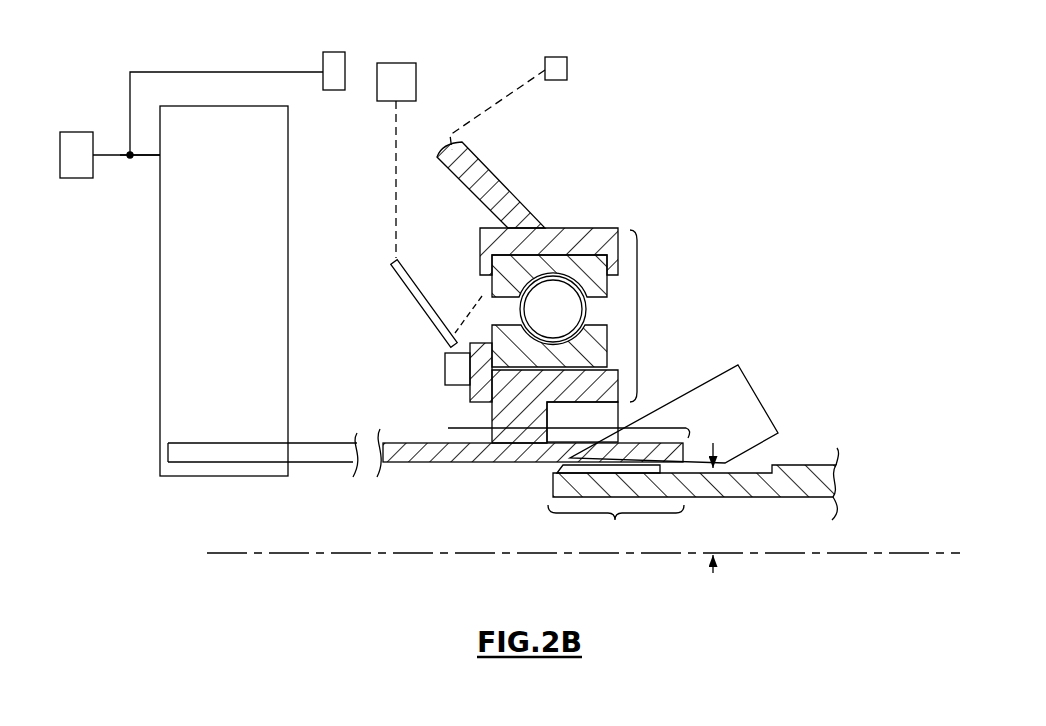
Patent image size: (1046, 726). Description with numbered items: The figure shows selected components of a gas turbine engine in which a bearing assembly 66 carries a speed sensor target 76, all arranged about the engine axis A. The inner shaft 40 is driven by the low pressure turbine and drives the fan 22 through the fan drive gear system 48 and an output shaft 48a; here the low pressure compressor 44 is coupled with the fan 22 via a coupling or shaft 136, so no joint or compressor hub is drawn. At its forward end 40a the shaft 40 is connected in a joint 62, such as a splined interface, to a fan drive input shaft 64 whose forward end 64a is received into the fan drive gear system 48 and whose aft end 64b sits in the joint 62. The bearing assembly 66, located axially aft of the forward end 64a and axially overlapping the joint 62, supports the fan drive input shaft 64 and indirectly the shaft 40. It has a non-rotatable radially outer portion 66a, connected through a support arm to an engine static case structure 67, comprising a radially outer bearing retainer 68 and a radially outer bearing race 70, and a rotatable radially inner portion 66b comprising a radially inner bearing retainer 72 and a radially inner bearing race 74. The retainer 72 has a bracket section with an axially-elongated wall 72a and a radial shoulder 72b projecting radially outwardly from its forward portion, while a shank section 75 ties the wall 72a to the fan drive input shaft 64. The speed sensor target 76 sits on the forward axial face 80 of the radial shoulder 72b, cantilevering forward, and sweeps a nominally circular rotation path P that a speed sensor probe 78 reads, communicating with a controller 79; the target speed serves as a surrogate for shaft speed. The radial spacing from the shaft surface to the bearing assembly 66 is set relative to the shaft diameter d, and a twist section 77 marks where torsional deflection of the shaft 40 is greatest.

The fan 22 is at (80, 178).
The coupling or shaft 136 is at (176, 72).
The low pressure compressor 44 is at (340, 52).
The fan drive gear system 48 is at (288, 193).
The output shaft 48a is at (147, 157).
The controller 79 is at (400, 63).
The engine static case structure 67 is at (561, 57).
The bearing assembly 66 is at (638, 312).
The radially outer bearing retainer 68 is at (565, 233).
The radially outer bearing race 70 is at (592, 248).
The radially outer portion 66a is at (468, 242).
The rotation path P is at (470, 266).
The radially inner portion 66b is at (466, 325).
The radially inner bearing race 74 is at (590, 352).
The speed sensor probe 78 is at (392, 262).
The forward axial face 80 is at (445, 370).
The speed sensor target 76 is at (439, 354).
The radially inner bearing retainer 72 is at (572, 460).
The radial shoulder 72b is at (483, 393).
The axially-elongated wall 72a is at (612, 396).
The shank section 75 is at (490, 403).
The twist section 77 is at (775, 393).
The fan drive input shaft 64 is at (313, 462).
The forward end 64a is at (242, 428).
The aft end 64b is at (448, 428).
The joint 62 is at (540, 481).
The shaft 40 is at (733, 497).
The forward end 40a is at (615, 520).
The engine axis A is at (354, 553).
The diameter d is at (715, 573).